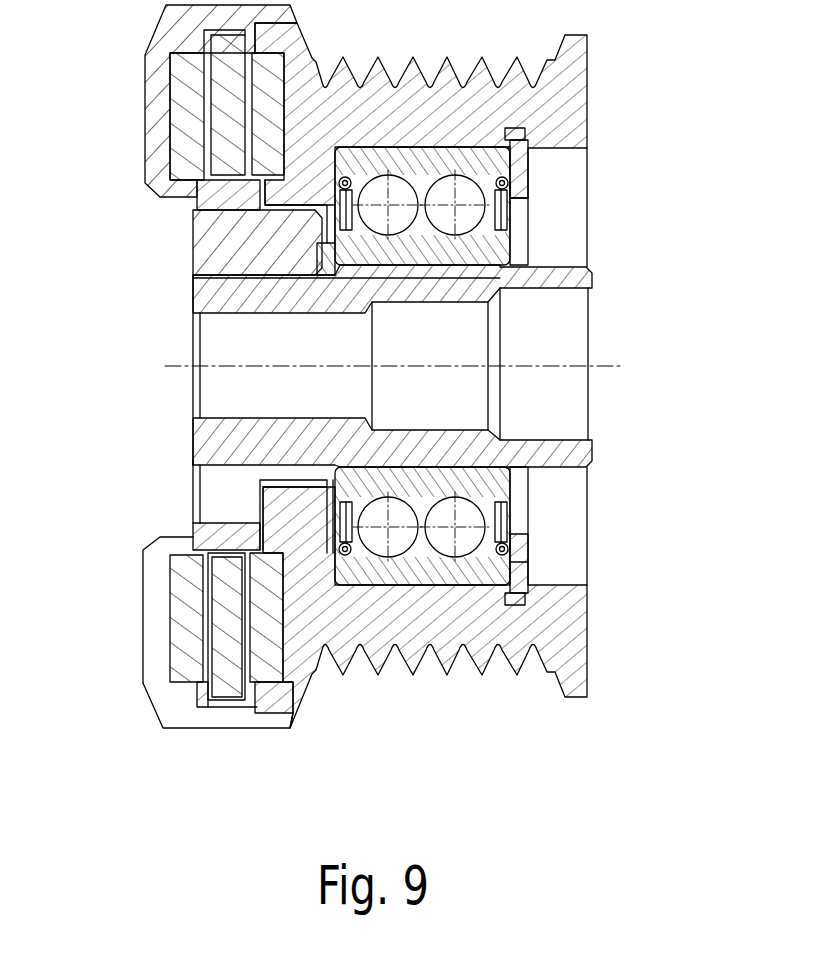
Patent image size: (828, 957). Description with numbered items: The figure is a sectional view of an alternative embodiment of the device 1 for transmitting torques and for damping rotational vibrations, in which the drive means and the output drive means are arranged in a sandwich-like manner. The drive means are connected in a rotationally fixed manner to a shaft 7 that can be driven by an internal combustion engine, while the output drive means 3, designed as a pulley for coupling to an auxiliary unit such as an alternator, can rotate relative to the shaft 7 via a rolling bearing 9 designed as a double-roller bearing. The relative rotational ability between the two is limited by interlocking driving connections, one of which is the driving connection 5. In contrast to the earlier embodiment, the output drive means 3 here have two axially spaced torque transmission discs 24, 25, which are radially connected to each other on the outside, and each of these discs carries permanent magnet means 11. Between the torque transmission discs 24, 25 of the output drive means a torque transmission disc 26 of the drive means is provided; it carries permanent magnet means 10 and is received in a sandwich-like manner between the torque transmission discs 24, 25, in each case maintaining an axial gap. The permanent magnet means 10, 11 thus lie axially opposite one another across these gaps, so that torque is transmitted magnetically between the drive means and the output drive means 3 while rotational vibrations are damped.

The device 1 is at (442, 736).
The output drive means 3 is at (167, 697).
The driving connection 5 is at (210, 265).
The shaft 7 is at (565, 457).
The rolling bearing 9 is at (502, 250).
The permanent magnet means 10 is at (237, 673).
The permanent magnet means 11 is at (183, 615).
The torque transmission disc 24 is at (157, 660).
The torque transmission disc 25 is at (290, 677).
The torque transmission disc 26 is at (210, 708).